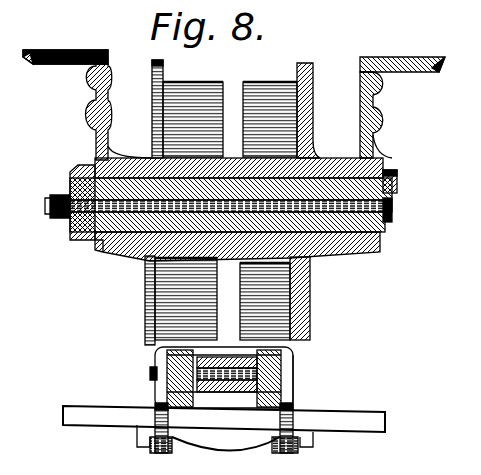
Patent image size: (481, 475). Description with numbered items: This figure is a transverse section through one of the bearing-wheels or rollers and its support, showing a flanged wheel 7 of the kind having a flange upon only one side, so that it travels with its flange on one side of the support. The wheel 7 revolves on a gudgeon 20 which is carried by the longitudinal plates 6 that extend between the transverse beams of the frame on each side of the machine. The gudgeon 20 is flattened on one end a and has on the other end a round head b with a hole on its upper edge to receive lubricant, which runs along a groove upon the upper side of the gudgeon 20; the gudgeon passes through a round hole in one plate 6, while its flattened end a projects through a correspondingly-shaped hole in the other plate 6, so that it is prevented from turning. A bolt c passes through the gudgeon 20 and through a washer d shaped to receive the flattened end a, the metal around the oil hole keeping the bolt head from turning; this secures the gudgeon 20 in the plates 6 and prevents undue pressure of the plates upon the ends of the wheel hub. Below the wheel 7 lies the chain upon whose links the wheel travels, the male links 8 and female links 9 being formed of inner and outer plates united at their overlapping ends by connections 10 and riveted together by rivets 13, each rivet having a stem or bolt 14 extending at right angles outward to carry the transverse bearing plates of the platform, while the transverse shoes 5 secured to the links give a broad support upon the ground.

The transverse shoe 5 is at (93, 412).
The longitudinal plate 6 is at (88, 88).
The flanged bearing-wheel 7 is at (163, 125).
The male link 8 is at (207, 340).
The female link 9 is at (167, 393).
The connection sleeve 10 is at (256, 363).
The rivet 13 is at (295, 357).
The stem or bolt 14 is at (330, 398).
The gudgeon 20 is at (132, 223).
The flattened end of gudgeon a is at (88, 222).
The round head of gudgeon b is at (397, 190).
The bolt c is at (384, 222).
The washer d is at (80, 172).